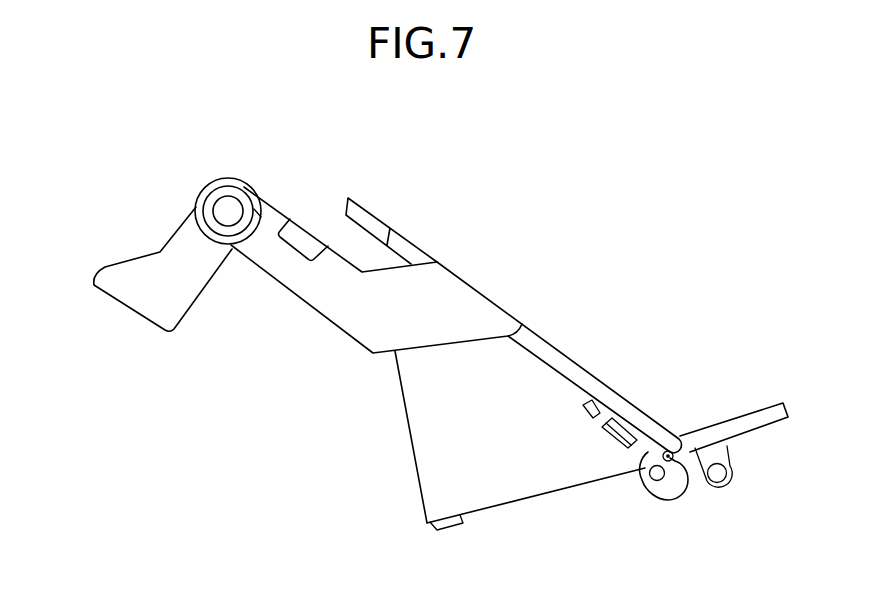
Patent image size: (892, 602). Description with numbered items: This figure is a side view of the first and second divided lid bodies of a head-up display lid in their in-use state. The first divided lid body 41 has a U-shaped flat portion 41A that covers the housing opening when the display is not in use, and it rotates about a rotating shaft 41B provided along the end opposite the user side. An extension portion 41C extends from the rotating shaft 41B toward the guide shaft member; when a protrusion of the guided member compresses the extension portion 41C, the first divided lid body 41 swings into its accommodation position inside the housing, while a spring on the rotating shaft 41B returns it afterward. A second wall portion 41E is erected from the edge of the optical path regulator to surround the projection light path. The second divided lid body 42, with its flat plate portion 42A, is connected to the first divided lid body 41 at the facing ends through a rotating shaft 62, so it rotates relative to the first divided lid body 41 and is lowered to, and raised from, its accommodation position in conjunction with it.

The first divided lid body 41 is at (545, 235).
The U-shaped flat portion 41A is at (596, 380).
The rotating shaft 41B is at (220, 178).
The extension portion 41C is at (128, 309).
The second wall portion 41E is at (418, 433).
The second divided lid body 42 is at (747, 410).
The flat plate portion 42A is at (730, 419).
The rotating shaft 62 is at (683, 492).